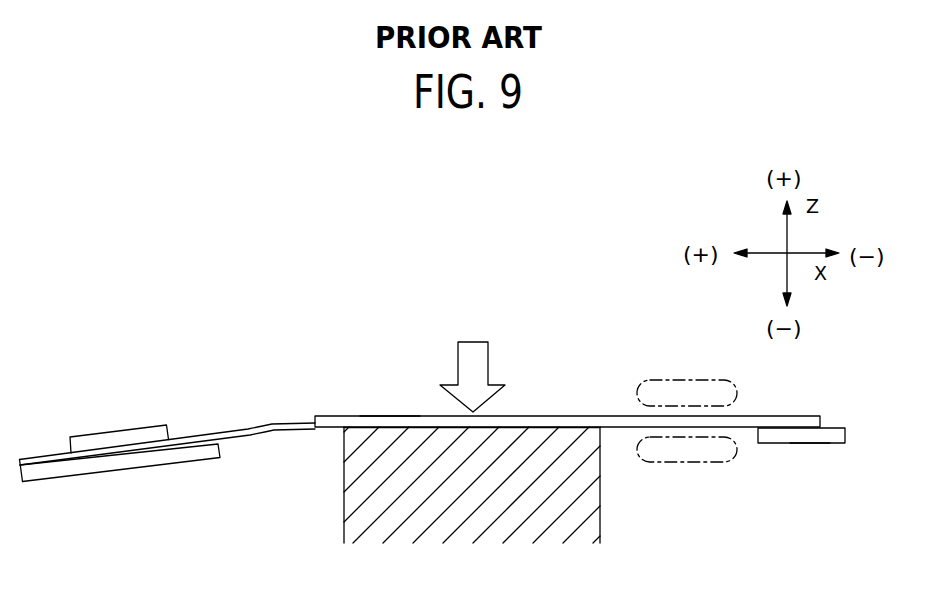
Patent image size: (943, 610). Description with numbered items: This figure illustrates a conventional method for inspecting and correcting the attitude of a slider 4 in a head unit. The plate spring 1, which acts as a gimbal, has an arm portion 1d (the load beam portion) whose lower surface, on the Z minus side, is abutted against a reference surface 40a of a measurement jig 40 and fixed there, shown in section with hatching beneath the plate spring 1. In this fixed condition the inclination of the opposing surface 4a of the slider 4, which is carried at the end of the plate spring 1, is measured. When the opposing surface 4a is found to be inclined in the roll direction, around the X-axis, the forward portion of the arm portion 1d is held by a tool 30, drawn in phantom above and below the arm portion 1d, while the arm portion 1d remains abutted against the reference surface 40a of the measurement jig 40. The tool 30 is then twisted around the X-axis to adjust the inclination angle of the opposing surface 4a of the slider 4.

The plate spring 1 is at (559, 409).
The arm portion 1d is at (390, 415).
The slider 4 is at (838, 436).
The opposing surface 4a is at (803, 446).
The tool 30 is at (687, 463).
The measurement jig 40 is at (383, 522).
The reference surface 40a is at (388, 429).